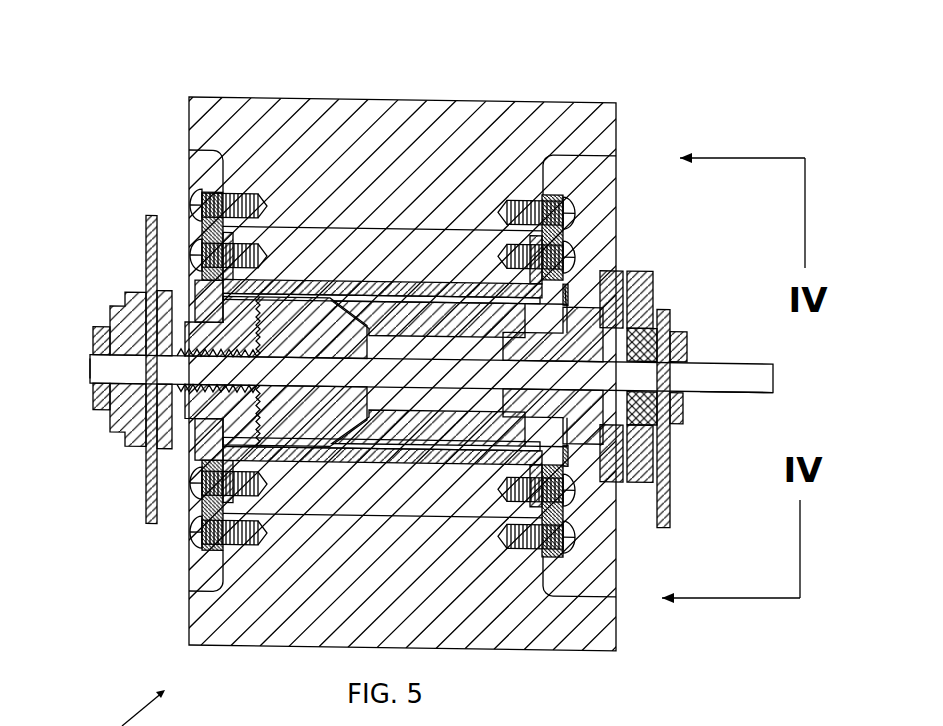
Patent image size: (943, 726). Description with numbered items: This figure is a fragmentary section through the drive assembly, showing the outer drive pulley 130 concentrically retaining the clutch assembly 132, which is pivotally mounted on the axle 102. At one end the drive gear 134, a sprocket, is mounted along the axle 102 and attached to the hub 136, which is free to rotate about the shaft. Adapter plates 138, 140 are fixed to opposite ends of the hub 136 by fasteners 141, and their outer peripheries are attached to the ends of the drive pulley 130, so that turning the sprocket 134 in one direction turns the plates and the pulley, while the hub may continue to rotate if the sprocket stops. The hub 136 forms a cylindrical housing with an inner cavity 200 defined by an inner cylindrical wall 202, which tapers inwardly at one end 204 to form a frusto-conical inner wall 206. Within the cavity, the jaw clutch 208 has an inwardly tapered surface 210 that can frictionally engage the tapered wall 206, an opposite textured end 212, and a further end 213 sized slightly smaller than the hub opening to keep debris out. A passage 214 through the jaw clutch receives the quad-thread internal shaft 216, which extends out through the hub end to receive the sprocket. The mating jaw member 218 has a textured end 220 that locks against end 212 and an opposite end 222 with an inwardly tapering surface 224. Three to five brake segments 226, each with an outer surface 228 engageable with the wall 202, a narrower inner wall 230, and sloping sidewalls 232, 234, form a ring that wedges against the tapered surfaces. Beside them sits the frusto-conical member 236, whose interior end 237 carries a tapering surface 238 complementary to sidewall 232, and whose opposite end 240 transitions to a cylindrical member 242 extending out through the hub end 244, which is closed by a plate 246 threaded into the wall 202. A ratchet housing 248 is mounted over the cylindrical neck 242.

The outer drive pulley 130 is at (255, 108).
The clutch assembly 132 is at (592, 248).
The drive gear 134 is at (126, 509).
The hub 136 is at (390, 470).
The adapter plate 138 is at (565, 510).
The adapter plate 140 is at (197, 223).
The fasteners 141 is at (530, 552).
The axle 102 is at (768, 376).
The inner cavity 200 is at (394, 373).
The inner cylindrical wall 202 is at (421, 293).
The end of hub 204 is at (193, 282).
The frusto-conical inner wall 206 is at (110, 411).
The jaw clutch 208 is at (120, 308).
The inwardly tapered surface 210 is at (195, 428).
The end of jaw clutch 212 is at (189, 566).
The end of jaw clutch member 213 is at (110, 400).
The passage 214 is at (95, 333).
The quad-thread internal shaft 216 is at (90, 366).
The mating jaw member 218 is at (300, 358).
The end of mating jaw member 220 is at (250, 297).
The opposite end of mating jaw member 222 is at (372, 463).
The inwardly tapering surface 224 is at (333, 462).
The brake segments 226 is at (477, 287).
The outer surface of brake segment 228 is at (490, 458).
The inner wall of brake segment 230 is at (425, 328).
The sloping sidewall 232 is at (572, 305).
The sloping sidewall 234 is at (333, 298).
The frusto-conical member 236 is at (640, 429).
The frusto-conical end 237 is at (503, 405).
The tapering surface 238 is at (612, 450).
The opposite end of frusto-conical member 240 is at (640, 322).
The cylindrical member 242 is at (672, 314).
The end of hub 244 is at (664, 513).
The plate 246 is at (567, 290).
The ratchet housing 248 is at (745, 407).